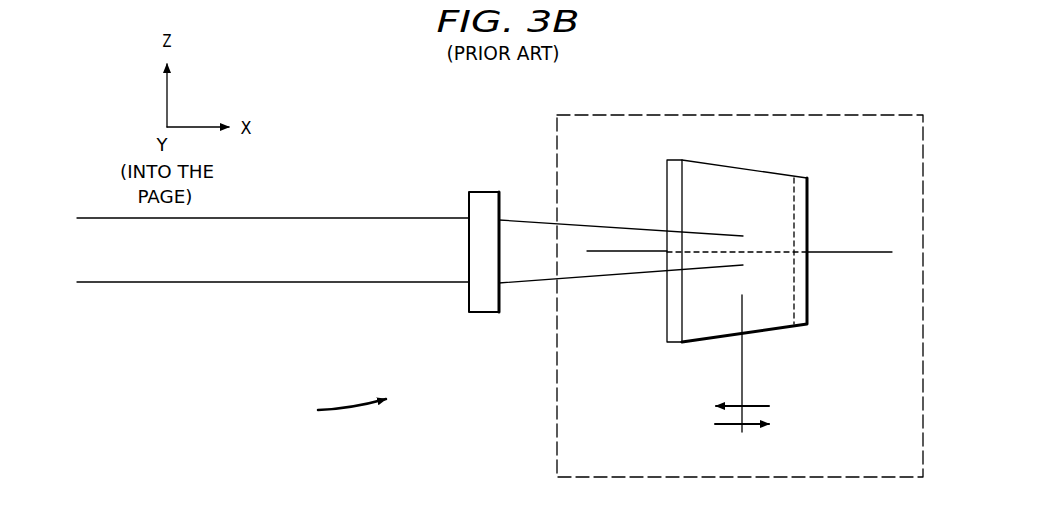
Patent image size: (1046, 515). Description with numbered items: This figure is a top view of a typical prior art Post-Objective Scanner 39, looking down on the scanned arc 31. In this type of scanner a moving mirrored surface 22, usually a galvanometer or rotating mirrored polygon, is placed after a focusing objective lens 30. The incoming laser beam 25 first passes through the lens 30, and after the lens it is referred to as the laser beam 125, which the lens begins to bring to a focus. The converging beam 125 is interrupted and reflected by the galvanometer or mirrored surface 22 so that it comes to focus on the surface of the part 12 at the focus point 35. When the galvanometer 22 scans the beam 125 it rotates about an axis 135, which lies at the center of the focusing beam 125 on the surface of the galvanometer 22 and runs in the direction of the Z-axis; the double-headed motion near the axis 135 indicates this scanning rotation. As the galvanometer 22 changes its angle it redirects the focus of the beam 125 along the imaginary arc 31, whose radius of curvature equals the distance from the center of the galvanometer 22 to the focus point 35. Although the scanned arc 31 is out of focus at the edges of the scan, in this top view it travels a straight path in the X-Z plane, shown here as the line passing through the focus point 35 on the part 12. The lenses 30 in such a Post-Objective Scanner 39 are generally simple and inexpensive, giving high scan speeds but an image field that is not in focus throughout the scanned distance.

The part 12 is at (556, 398).
The moving mirrored surface 22 is at (761, 183).
The laser beam 25 is at (333, 283).
The focusing objective lens 30 is at (469, 200).
The imaginary arc 31 is at (828, 252).
The focus point 35 is at (752, 252).
The post-objective scanner 39 is at (337, 409).
The laser beam after the lens 125 is at (572, 281).
The axis of rotation 135 is at (742, 358).